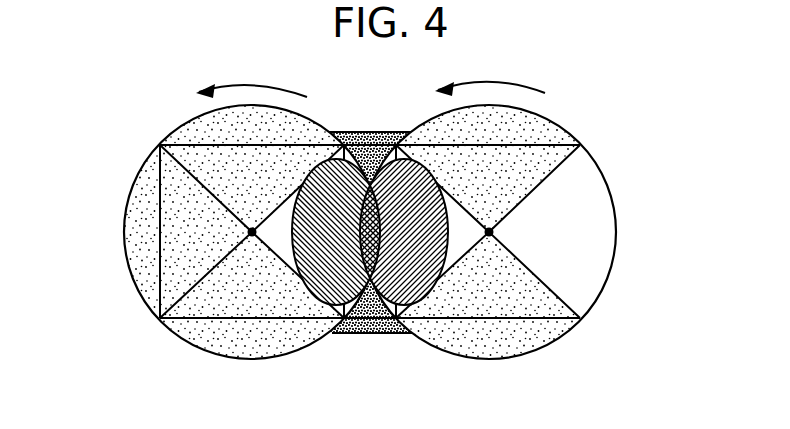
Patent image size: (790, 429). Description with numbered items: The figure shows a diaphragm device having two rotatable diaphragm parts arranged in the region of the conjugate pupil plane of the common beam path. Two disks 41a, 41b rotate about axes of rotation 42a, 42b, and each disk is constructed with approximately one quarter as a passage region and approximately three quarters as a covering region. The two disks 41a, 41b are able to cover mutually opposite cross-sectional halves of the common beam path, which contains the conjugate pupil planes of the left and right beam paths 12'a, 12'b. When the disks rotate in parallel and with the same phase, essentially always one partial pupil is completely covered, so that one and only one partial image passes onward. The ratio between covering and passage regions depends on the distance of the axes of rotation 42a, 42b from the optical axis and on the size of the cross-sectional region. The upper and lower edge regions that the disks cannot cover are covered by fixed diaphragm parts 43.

The rotating diaphragm disk 41a is at (160, 145).
The rotating diaphragm disk 41b is at (527, 128).
The axis of rotation 42a is at (252, 232).
The axis of rotation 42b is at (489, 232).
The fixed diaphragm part 43 is at (360, 132).
The conjugate pupil plane of the left beam path 12'a is at (273, 286).
The conjugate pupil plane of the right beam path 12'b is at (433, 279).